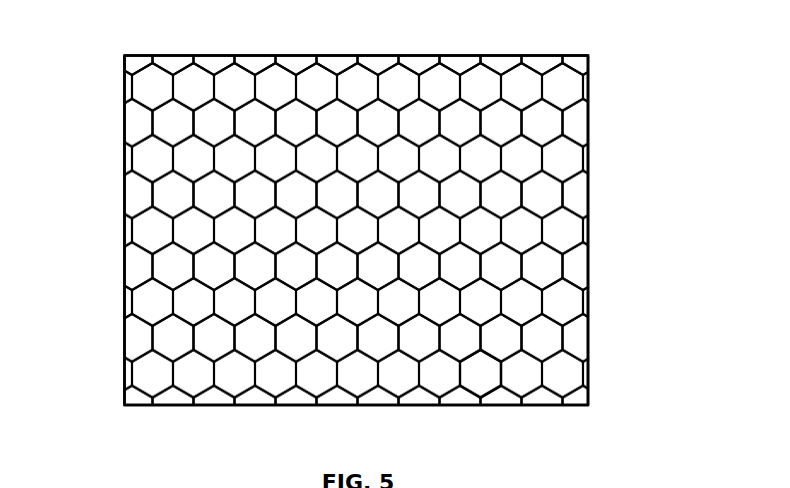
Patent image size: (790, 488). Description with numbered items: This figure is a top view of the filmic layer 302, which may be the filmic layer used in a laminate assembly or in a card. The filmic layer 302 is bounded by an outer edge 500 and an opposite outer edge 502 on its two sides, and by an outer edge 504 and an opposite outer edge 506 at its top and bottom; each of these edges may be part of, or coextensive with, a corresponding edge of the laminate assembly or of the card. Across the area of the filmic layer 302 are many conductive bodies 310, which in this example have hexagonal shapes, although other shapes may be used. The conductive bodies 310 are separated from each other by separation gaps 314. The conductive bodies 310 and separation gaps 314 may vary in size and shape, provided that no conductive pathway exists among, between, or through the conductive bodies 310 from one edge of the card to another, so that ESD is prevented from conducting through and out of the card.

The filmic layer 302 is at (591, 54).
The conductive bodies 310 is at (470, 378).
The separation gaps 314 is at (486, 390).
The outer edge 500 is at (123, 195).
The opposite outer edge 502 is at (590, 195).
The outer edge 504 is at (335, 56).
The opposite outer edge 506 is at (293, 405).